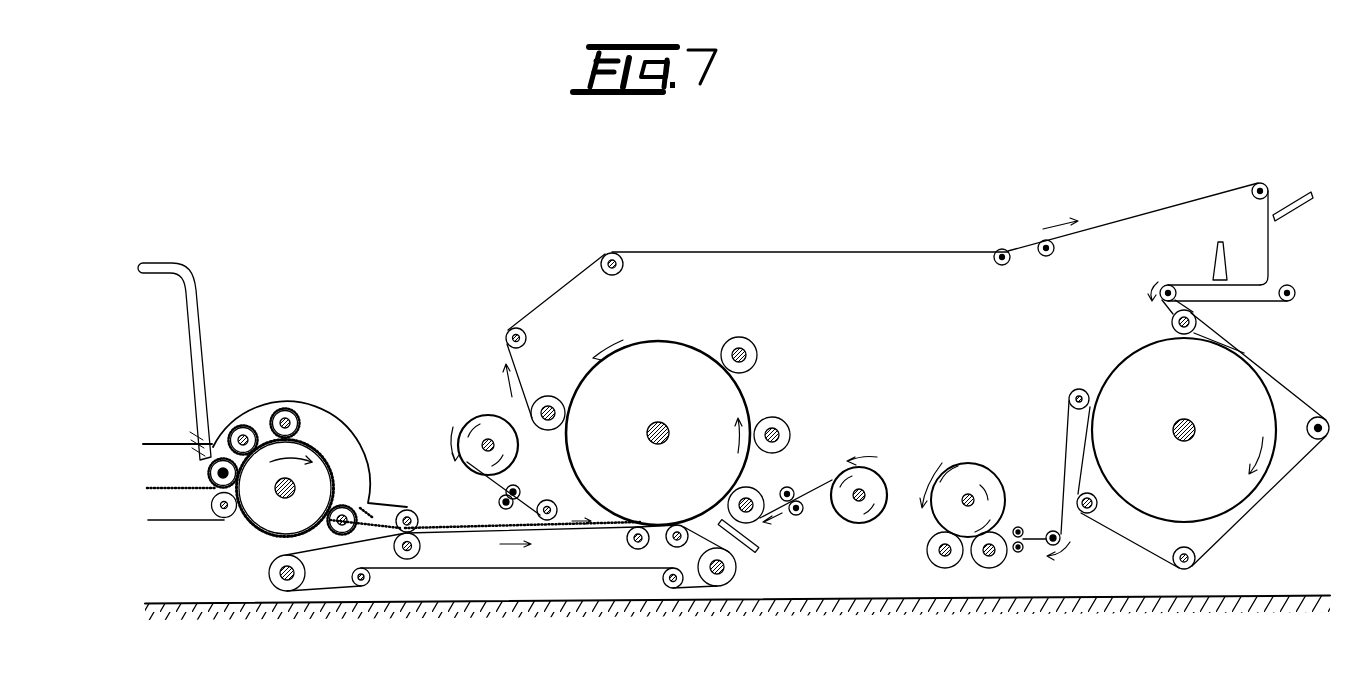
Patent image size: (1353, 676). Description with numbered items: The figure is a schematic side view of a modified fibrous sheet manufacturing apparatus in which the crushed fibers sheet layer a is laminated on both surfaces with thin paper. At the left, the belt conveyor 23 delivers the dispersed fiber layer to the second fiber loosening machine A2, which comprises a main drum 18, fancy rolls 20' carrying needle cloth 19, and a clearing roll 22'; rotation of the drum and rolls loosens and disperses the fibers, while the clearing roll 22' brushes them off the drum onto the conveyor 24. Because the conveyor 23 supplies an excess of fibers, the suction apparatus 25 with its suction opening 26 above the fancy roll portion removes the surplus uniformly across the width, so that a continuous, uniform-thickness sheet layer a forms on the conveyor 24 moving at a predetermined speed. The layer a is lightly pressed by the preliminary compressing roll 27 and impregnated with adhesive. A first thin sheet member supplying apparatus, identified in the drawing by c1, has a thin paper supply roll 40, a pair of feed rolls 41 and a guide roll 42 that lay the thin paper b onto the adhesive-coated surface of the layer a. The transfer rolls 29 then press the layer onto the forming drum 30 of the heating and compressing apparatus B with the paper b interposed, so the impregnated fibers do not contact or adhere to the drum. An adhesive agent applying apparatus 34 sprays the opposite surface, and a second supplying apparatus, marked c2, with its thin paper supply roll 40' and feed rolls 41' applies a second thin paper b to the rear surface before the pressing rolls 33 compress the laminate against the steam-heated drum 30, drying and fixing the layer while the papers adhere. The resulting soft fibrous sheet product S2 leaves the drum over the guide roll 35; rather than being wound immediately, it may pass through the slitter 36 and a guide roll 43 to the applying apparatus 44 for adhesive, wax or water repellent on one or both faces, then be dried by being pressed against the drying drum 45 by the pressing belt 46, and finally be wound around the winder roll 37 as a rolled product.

The main drum 18 is at (322, 460).
The needle cloth 19 is at (243, 428).
The fancy roll 20' is at (286, 394).
The clearing roll 22' is at (375, 486).
The belt conveyor 23 is at (183, 521).
The conveyor 24 is at (436, 536).
The suction apparatus 25 is at (193, 283).
The suction opening 26 is at (209, 466).
The preliminary compressing roll 27 is at (408, 508).
The transfer rolls 29 is at (676, 548).
The forming drum 30 is at (707, 348).
The pressing rolls 33 is at (771, 418).
The adhesive agent applying apparatus 34 is at (760, 547).
The guide roll 35 is at (552, 398).
The slitter 36 is at (1021, 543).
The winder roll 37 is at (952, 463).
The thin paper supply roll 40 is at (495, 442).
The thin paper supply roll 40' is at (871, 471).
The feed rolls 41 is at (483, 504).
The feed rolls 41' is at (816, 522).
The guide roll 42 is at (557, 524).
The guide roll 43 is at (1258, 184).
The applying apparatus 44 is at (1217, 245).
The drying drum 45 is at (1123, 375).
The pressing belt 46 is at (1255, 508).
The second fiber loosening machine A2 is at (315, 405).
The heating and compressing apparatus B is at (669, 329).
The fibrous sheet product S2 is at (990, 450).
The crushed fibers sheet layer a is at (487, 533).
The thin paper b is at (547, 500).
The fibers c1 is at (442, 425).
The fibers c2 is at (839, 449).